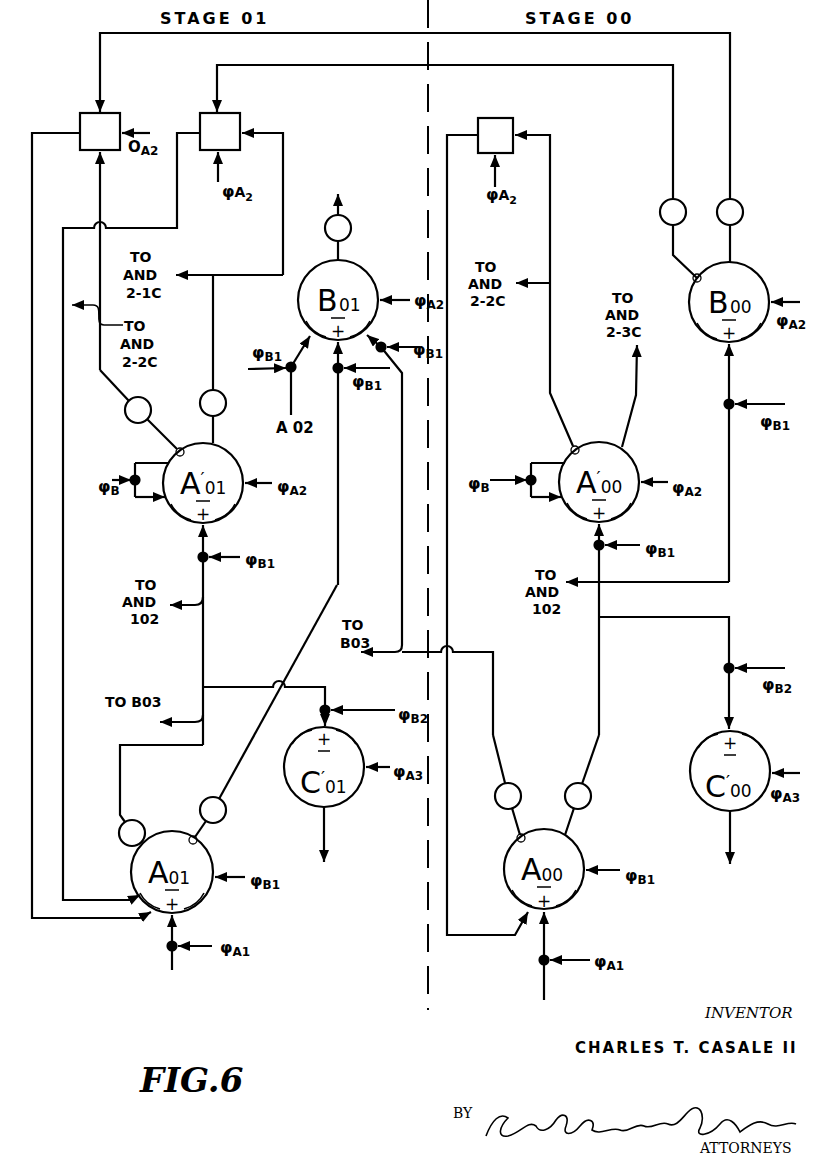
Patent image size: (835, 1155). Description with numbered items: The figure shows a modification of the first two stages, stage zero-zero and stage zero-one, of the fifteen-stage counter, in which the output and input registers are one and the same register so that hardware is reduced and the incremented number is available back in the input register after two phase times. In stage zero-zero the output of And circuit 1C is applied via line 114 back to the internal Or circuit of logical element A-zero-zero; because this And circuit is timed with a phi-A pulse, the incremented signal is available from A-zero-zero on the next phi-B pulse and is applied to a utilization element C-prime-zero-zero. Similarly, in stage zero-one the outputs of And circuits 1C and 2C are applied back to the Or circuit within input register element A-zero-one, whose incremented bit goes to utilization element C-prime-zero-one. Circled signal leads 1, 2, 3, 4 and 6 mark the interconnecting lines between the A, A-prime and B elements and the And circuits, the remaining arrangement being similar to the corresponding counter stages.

The And circuit 1C is at (114, 113).
The And circuit 2C is at (234, 113).
The line 114 is at (447, 252).
The signal lead 1 is at (421, 157).
The signal lead 2 is at (312, 559).
The signal lead 3 is at (161, 795).
The signal lead 4 is at (582, 785).
The signal lead 6 is at (338, 227).